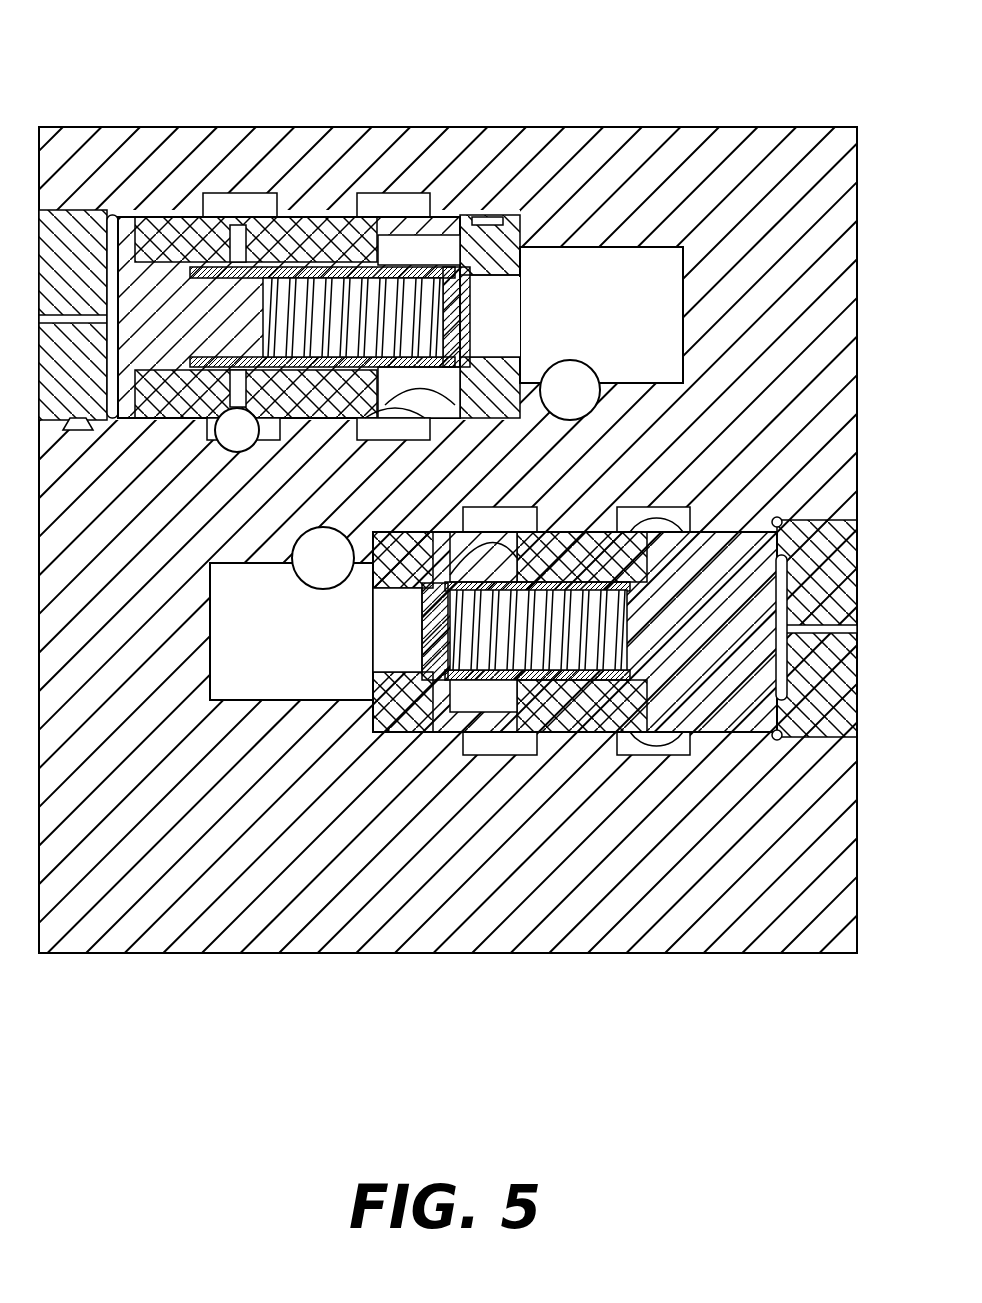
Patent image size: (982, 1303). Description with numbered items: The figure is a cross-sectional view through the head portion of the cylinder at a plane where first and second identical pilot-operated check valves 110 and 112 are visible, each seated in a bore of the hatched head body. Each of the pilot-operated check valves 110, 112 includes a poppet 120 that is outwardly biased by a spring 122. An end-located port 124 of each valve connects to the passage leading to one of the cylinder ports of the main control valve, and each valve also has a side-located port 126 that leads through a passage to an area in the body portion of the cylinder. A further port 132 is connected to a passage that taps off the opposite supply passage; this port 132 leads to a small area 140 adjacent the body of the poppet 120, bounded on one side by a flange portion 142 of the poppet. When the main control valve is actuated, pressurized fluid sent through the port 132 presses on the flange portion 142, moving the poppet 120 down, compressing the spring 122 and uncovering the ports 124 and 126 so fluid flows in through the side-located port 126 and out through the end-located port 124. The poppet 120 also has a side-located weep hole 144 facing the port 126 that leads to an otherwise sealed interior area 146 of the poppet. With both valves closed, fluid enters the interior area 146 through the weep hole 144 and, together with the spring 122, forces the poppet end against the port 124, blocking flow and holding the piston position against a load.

The pilot-operated check valve 110 is at (421, 767).
The pilot-operated check valve 112 is at (445, 172).
The poppet 120 is at (330, 263).
The spring 122 is at (357, 300).
The end-located port 124 is at (495, 317).
The side-located port 126 is at (418, 413).
The port 132 is at (240, 430).
The small area 140 is at (232, 372).
The flange portion 142 is at (230, 260).
The weep hole 144 is at (470, 580).
The interior area 146 is at (570, 628).